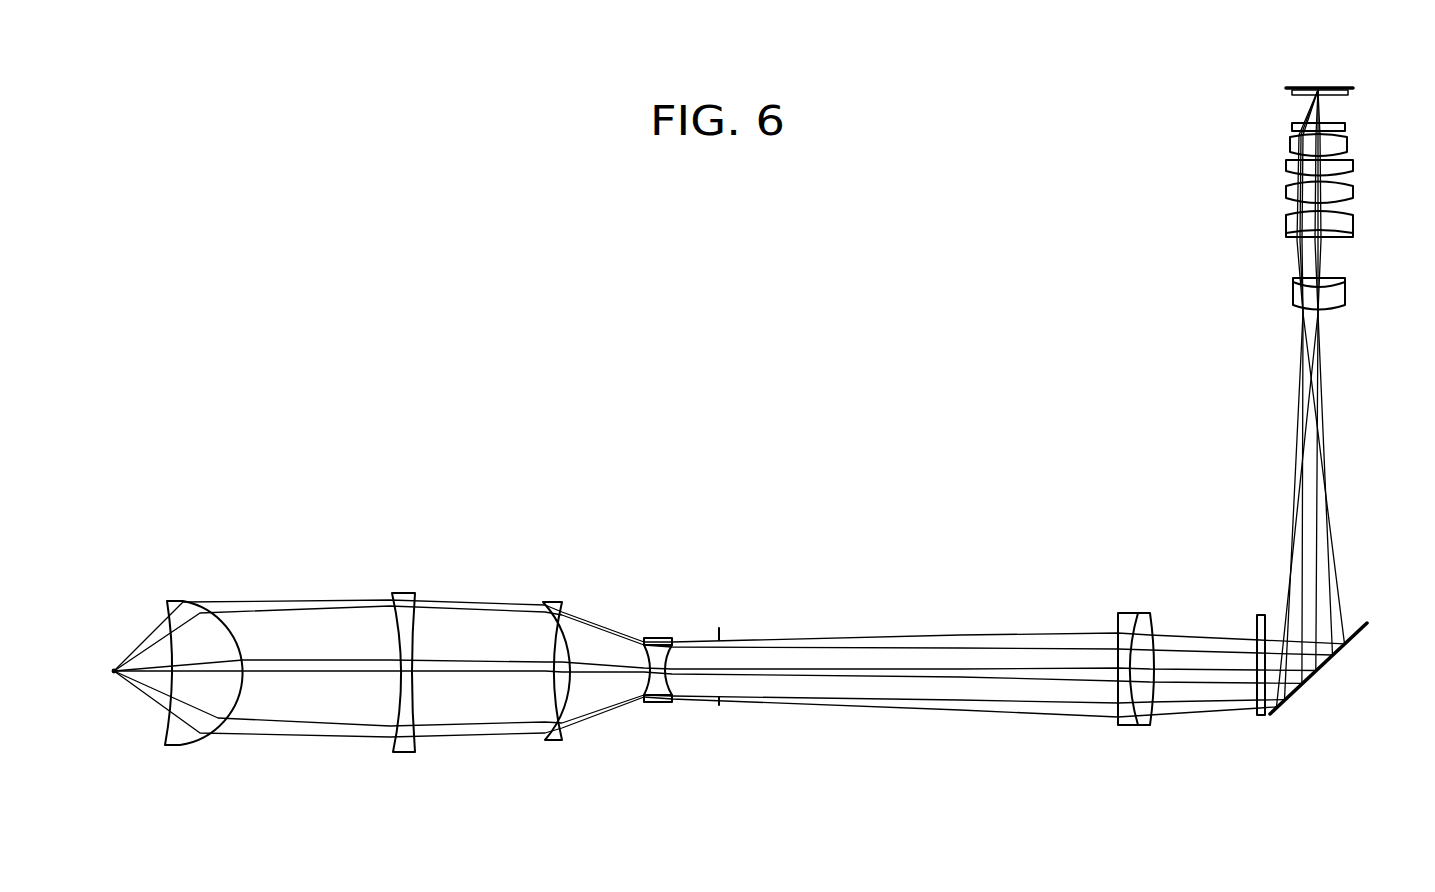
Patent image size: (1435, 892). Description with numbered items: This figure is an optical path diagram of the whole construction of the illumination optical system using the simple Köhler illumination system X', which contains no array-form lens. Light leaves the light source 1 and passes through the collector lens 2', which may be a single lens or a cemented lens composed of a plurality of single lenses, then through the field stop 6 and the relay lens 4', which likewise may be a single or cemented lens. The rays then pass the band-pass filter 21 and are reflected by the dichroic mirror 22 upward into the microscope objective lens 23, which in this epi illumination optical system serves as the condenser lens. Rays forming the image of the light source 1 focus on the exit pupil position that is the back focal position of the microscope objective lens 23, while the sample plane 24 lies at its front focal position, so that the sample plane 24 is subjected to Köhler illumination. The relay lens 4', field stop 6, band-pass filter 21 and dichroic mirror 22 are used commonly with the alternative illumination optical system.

The light source 1 is at (114, 672).
The collector lens 2' is at (416, 706).
The field stop 6 is at (719, 705).
The relay lens 4' is at (1135, 705).
The band-pass filter 21 is at (1262, 716).
The dichroic mirror 22 is at (1366, 627).
The microscope objective lens 23 is at (1379, 120).
The sample plane 24 is at (1353, 90).